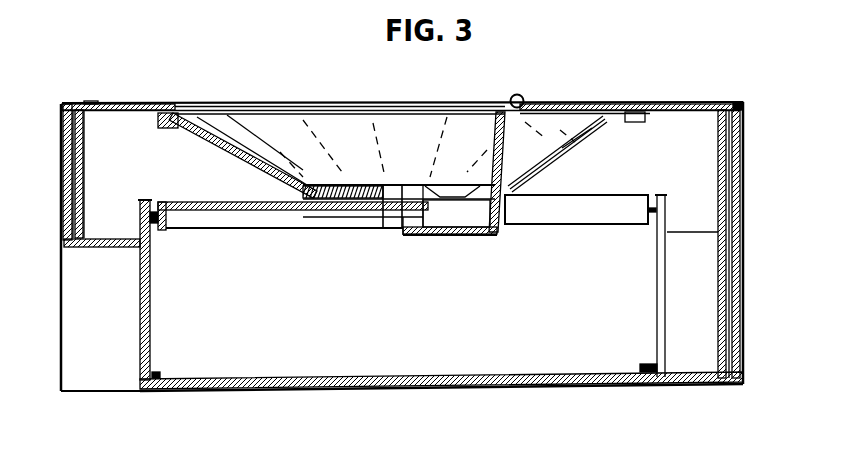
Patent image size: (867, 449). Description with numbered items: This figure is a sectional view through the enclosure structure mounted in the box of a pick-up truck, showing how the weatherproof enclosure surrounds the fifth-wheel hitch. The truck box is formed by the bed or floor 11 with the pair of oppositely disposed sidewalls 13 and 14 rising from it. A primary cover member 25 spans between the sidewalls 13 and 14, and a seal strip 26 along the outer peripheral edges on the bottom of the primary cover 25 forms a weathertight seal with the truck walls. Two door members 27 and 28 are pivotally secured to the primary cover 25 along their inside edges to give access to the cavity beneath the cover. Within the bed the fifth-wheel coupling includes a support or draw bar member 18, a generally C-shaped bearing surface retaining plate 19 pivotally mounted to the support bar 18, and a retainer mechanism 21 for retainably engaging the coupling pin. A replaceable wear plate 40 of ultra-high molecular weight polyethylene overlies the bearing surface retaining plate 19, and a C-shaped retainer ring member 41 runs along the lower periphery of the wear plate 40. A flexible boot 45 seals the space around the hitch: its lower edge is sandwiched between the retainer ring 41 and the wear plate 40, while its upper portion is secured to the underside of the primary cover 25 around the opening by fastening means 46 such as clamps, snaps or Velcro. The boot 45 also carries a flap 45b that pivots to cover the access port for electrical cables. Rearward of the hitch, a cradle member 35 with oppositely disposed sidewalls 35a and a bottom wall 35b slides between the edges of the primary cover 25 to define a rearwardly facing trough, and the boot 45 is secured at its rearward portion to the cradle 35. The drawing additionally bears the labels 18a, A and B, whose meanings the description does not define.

The bed or floor 11 is at (248, 375).
The sidewall 13 is at (727, 302).
The sidewall 14 is at (63, 192).
The support or draw bar member 18 is at (221, 212).
The vertical partition wall 18a is at (151, 335).
The bearing surface retaining plate 19 is at (357, 205).
The retainer mechanism 21 is at (386, 218).
The primary cover member 25 is at (732, 103).
The seal strip 26 is at (742, 110).
The door member 27 is at (91, 102).
The door member 28 is at (657, 105).
The cradle member 35 is at (503, 222).
The sidewalls of cradle 35a is at (508, 148).
The bottom wall of cradle 35b is at (468, 235).
The wear plate 40 is at (360, 183).
The C-shaped retainer ring member 41 is at (303, 198).
The boot 45 is at (447, 118).
The flap 45b is at (241, 149).
The fastening means 46 is at (166, 128).
The direction arrow A is at (250, 191).
The direction arrow B is at (512, 88).